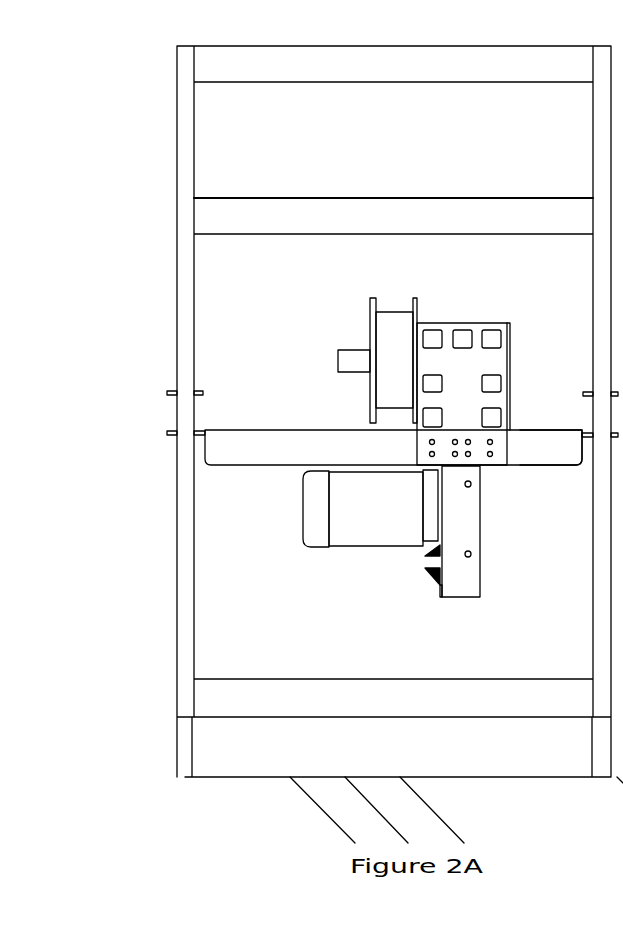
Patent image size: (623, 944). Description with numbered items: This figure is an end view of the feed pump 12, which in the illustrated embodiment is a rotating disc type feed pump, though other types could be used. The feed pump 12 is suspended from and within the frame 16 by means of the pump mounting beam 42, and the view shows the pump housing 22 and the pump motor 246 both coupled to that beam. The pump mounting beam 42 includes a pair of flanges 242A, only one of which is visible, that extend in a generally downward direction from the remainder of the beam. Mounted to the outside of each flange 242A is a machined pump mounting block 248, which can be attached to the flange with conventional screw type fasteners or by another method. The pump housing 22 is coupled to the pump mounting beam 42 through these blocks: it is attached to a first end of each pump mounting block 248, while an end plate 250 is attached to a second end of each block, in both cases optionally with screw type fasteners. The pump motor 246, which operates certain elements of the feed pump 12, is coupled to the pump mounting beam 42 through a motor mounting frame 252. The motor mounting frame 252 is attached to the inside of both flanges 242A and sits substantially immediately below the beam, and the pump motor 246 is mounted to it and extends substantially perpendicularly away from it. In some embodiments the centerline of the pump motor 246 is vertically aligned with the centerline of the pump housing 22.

The feed pump 12 is at (265, 326).
The frame 16 is at (178, 713).
The pump housing 22 is at (393, 305).
The pump mounting beam 42 is at (544, 470).
The flange 242A is at (234, 453).
The pump motor 246 is at (293, 541).
The pump mounting block 248 is at (458, 319).
The end plate 250 is at (495, 363).
The motor mounting frame 252 is at (463, 589).